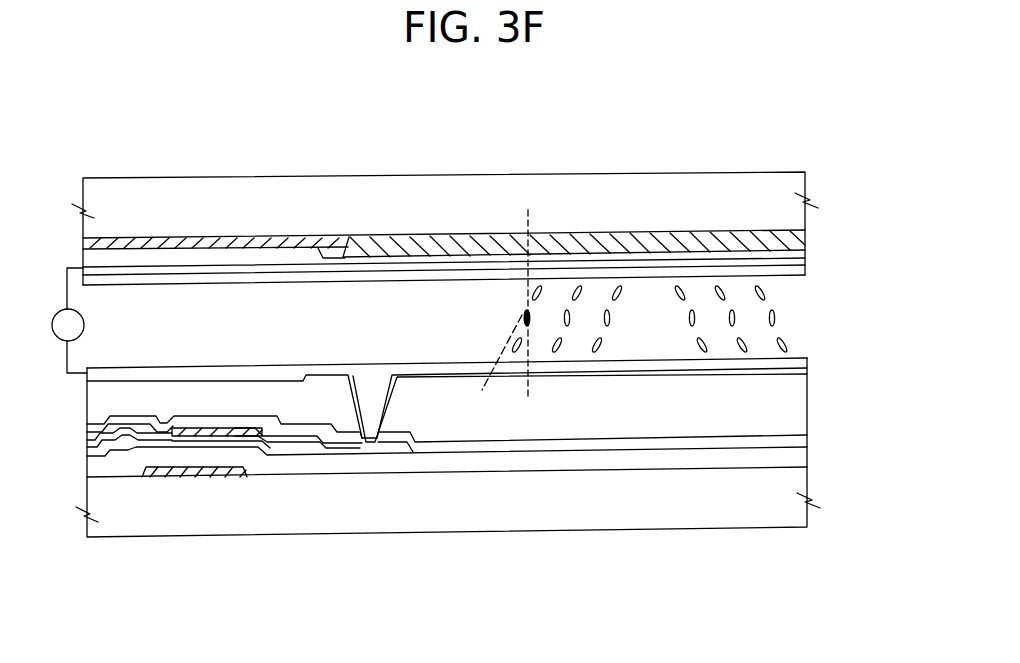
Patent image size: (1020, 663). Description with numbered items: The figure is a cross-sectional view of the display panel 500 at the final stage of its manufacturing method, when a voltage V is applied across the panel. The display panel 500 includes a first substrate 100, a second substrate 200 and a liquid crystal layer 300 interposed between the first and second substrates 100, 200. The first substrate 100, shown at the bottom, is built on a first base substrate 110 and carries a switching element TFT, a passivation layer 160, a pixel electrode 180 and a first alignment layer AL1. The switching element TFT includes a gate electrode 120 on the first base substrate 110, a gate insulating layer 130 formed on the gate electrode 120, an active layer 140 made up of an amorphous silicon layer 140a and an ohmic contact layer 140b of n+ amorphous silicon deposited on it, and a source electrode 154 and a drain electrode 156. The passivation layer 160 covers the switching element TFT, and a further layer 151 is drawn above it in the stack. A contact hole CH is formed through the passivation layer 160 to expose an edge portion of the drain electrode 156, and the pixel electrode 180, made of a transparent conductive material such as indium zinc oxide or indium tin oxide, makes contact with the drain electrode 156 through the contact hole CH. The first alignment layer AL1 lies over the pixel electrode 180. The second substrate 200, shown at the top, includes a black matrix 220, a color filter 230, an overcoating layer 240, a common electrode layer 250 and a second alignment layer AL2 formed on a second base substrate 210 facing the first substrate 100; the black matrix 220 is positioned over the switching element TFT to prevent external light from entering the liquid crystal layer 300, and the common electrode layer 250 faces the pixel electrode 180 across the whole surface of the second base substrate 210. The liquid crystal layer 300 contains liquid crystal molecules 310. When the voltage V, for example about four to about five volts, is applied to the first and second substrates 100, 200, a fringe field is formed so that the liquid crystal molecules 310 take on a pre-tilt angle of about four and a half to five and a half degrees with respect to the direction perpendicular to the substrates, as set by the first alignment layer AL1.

The display panel 500 is at (435, 93).
The second substrate 200 is at (820, 172).
The second base substrate 210 is at (198, 188).
The black matrix 220 is at (275, 236).
The color filter 230 is at (353, 237).
The overcoating layer 240 is at (418, 256).
The common electrode layer 250 is at (763, 260).
The second alignment layer AL2 is at (683, 260).
The voltage V is at (69, 320).
The liquid crystal layer 300 is at (820, 288).
The liquid crystal molecules 310 is at (523, 318).
The first substrate 100 is at (820, 358).
The first base substrate 110 is at (489, 524).
The gate electrode 120 is at (176, 478).
The gate insulating layer 130 is at (532, 464).
The active layer 140 is at (345, 569).
The amorphous silicon layer 140a is at (277, 456).
The ohmic contact layer 140b is at (296, 456).
The insulating layer 151 is at (573, 445).
The source electrode 154 is at (138, 434).
The drain electrode 156 is at (223, 434).
The passivation layer 160 is at (700, 432).
The pixel electrode 180 is at (425, 376).
The first alignment layer AL1 is at (597, 372).
The contact hole CH is at (374, 398).
The switching element TFT is at (103, 603).